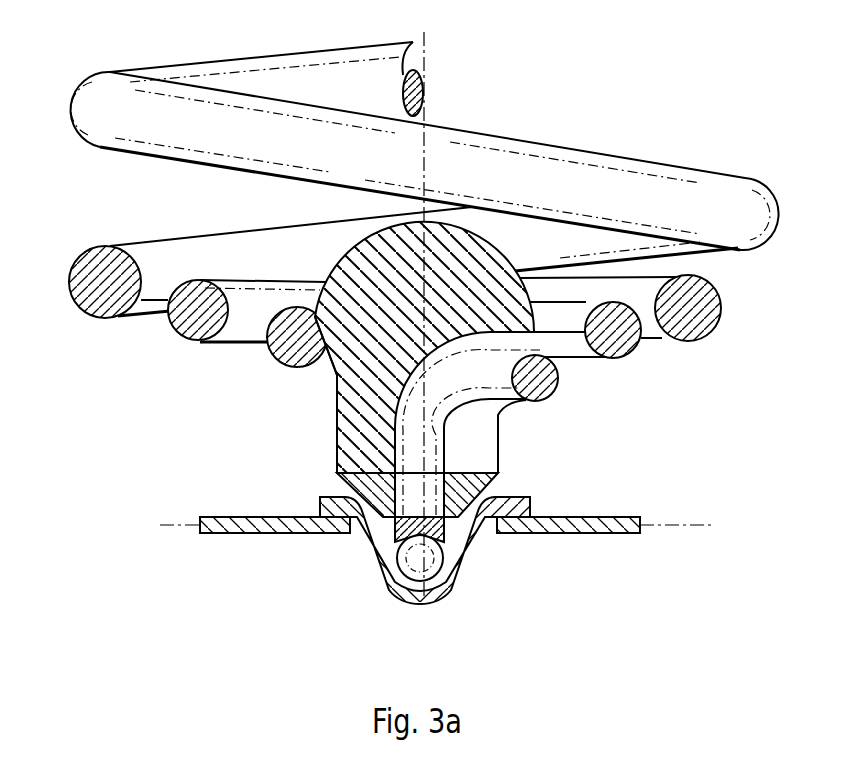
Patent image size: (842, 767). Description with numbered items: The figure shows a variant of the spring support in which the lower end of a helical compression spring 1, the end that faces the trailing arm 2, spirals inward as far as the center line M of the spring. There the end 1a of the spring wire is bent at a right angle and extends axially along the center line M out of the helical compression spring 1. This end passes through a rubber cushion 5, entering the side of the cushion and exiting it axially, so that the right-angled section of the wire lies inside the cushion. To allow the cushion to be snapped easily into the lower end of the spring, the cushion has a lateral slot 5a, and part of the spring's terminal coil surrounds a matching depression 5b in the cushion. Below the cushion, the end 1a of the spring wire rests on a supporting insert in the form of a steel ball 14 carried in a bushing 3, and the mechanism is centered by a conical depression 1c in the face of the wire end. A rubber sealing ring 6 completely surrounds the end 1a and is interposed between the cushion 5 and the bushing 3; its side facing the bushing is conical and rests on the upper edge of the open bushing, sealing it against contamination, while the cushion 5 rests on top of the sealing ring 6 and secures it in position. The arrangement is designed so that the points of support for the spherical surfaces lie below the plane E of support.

The helical compression spring 1 is at (565, 150).
The end of the spring wire 1a is at (437, 447).
The conical depression 1c is at (397, 590).
The trailing arm 2 is at (575, 524).
The bushing 3 is at (443, 582).
The rubber cushion 5 is at (338, 401).
The lateral slot 5a is at (500, 418).
The depression 5b is at (298, 348).
The rubber sealing ring 6 is at (497, 490).
The steel ball 14 is at (426, 583).
The center line of the spring M is at (428, 82).
The plane of support E is at (700, 533).